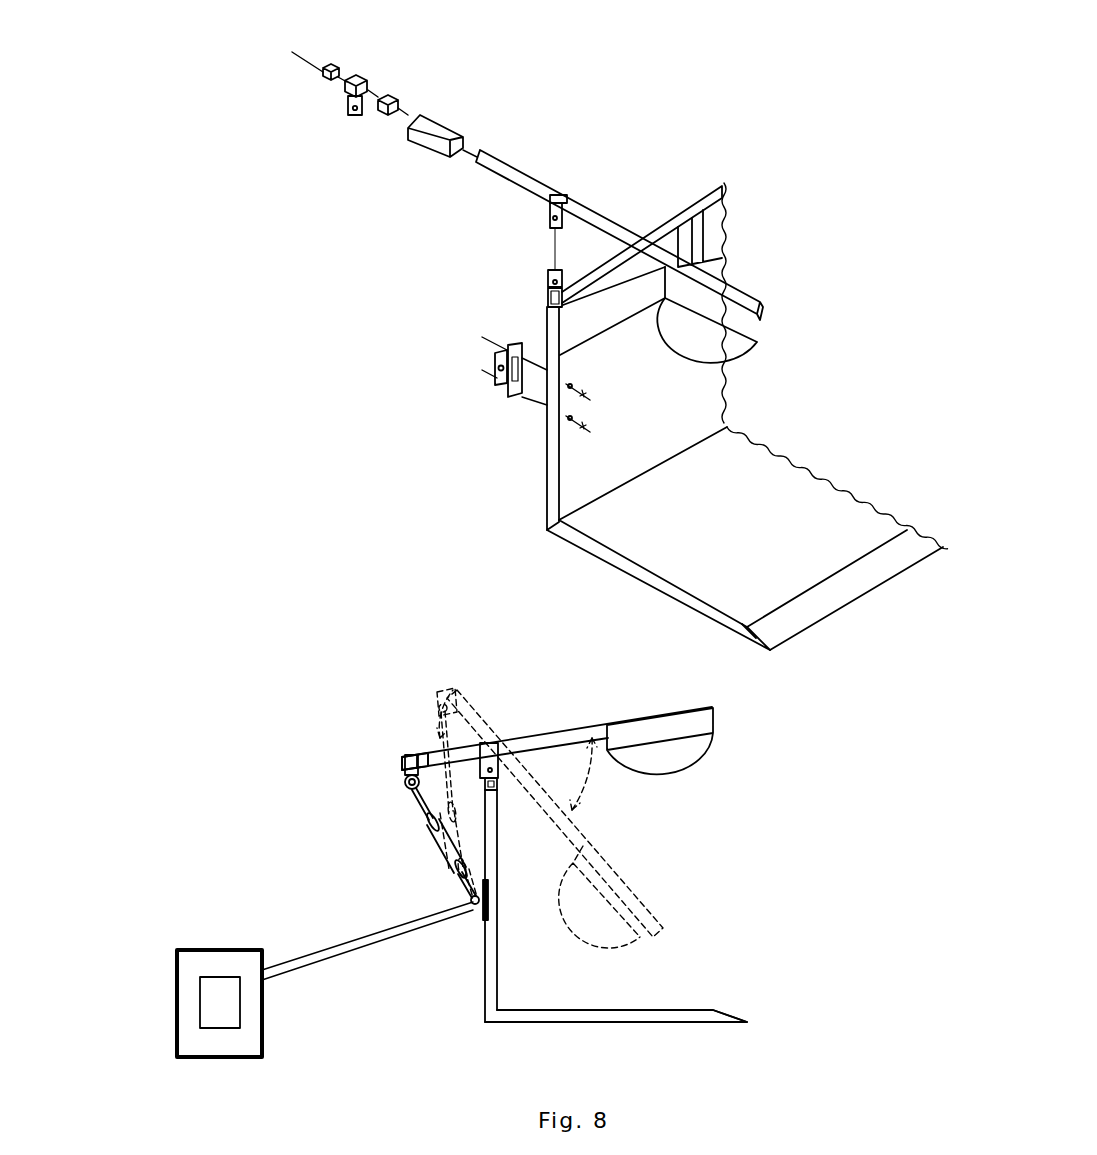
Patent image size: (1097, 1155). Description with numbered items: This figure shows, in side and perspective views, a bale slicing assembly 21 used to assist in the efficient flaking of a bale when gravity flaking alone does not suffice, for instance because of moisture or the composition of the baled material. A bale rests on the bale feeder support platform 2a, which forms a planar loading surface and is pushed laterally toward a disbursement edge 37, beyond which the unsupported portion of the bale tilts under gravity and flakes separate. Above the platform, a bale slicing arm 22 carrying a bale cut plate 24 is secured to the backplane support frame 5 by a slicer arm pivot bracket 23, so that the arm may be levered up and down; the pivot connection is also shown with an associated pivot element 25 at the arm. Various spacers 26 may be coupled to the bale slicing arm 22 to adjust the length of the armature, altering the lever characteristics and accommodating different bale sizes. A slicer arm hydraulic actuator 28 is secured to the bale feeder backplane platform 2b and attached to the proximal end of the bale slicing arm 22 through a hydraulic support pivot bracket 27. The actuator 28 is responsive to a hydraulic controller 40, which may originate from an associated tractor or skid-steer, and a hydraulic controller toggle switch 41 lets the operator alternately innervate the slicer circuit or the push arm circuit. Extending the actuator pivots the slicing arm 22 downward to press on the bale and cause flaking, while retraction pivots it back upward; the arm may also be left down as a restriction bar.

The bale feeder support platform 2a is at (777, 547).
The bale feeder backplane platform 2b is at (573, 482).
The backplane support frame 5 is at (690, 210).
The bale slicing assembly 21 is at (403, 320).
The bale slicing arm 22 is at (600, 222).
The slicer arm pivot bracket 23 is at (547, 277).
The bale cut plate 24 is at (735, 347).
The pivot bracket 25 is at (360, 78).
The spacers 26 is at (450, 128).
The hydraulic support pivot bracket 27 is at (497, 378).
The slicer arm hydraulic actuator 28 is at (437, 840).
The disbursement edge 37 is at (740, 630).
The hydraulic controller 40 is at (207, 947).
The hydraulic controller toggle switch 41 is at (200, 1008).